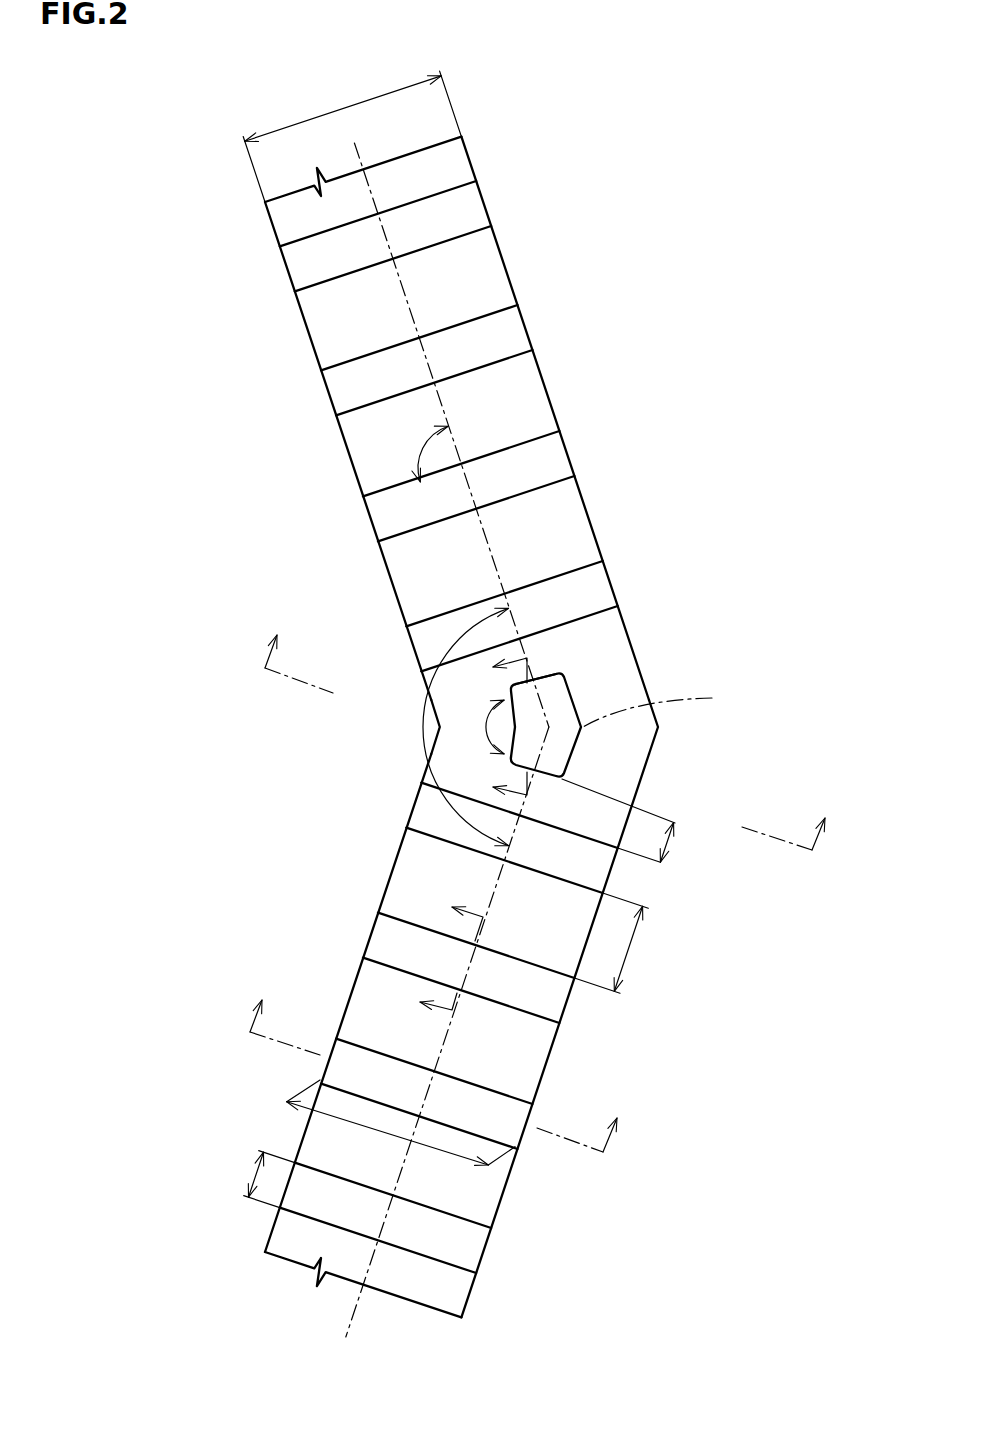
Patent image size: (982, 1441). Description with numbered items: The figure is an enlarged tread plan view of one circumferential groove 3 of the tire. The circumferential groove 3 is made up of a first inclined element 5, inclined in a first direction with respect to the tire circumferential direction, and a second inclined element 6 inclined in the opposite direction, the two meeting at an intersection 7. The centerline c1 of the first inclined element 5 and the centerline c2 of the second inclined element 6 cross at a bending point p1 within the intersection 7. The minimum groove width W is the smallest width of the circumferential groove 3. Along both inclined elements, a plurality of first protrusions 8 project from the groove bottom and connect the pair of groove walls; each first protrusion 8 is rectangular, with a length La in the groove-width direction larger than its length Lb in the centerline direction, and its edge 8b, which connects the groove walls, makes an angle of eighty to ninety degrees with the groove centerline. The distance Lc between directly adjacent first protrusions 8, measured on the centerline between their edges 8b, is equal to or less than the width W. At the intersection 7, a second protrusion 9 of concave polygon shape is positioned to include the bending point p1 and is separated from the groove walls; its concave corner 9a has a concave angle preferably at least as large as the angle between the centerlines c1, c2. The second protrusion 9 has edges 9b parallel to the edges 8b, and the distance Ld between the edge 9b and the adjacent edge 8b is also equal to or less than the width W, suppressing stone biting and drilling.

The circumferential groove 3 is at (553, 177).
The first inclined element 5 is at (508, 1185).
The second inclined element 6 is at (506, 265).
The intersection 7 is at (660, 728).
The first protrusion 8 is at (500, 337).
The edge 8b is at (582, 618).
The second protrusion 9 is at (557, 695).
The concave corner 9a is at (512, 728).
The edge 9b is at (543, 670).
The centerline c1 is at (372, 1265).
The centerline c2 is at (400, 282).
The bending point p1 is at (665, 707).
The minimum groove width W is at (352, 136).
The length in groove-width direction La is at (360, 1122).
The length in centerline direction Lb is at (253, 1179).
The distance between directly adjacent first protrusions Lc is at (622, 943).
The distance between second protrusion and first protrusion Ld is at (634, 822).